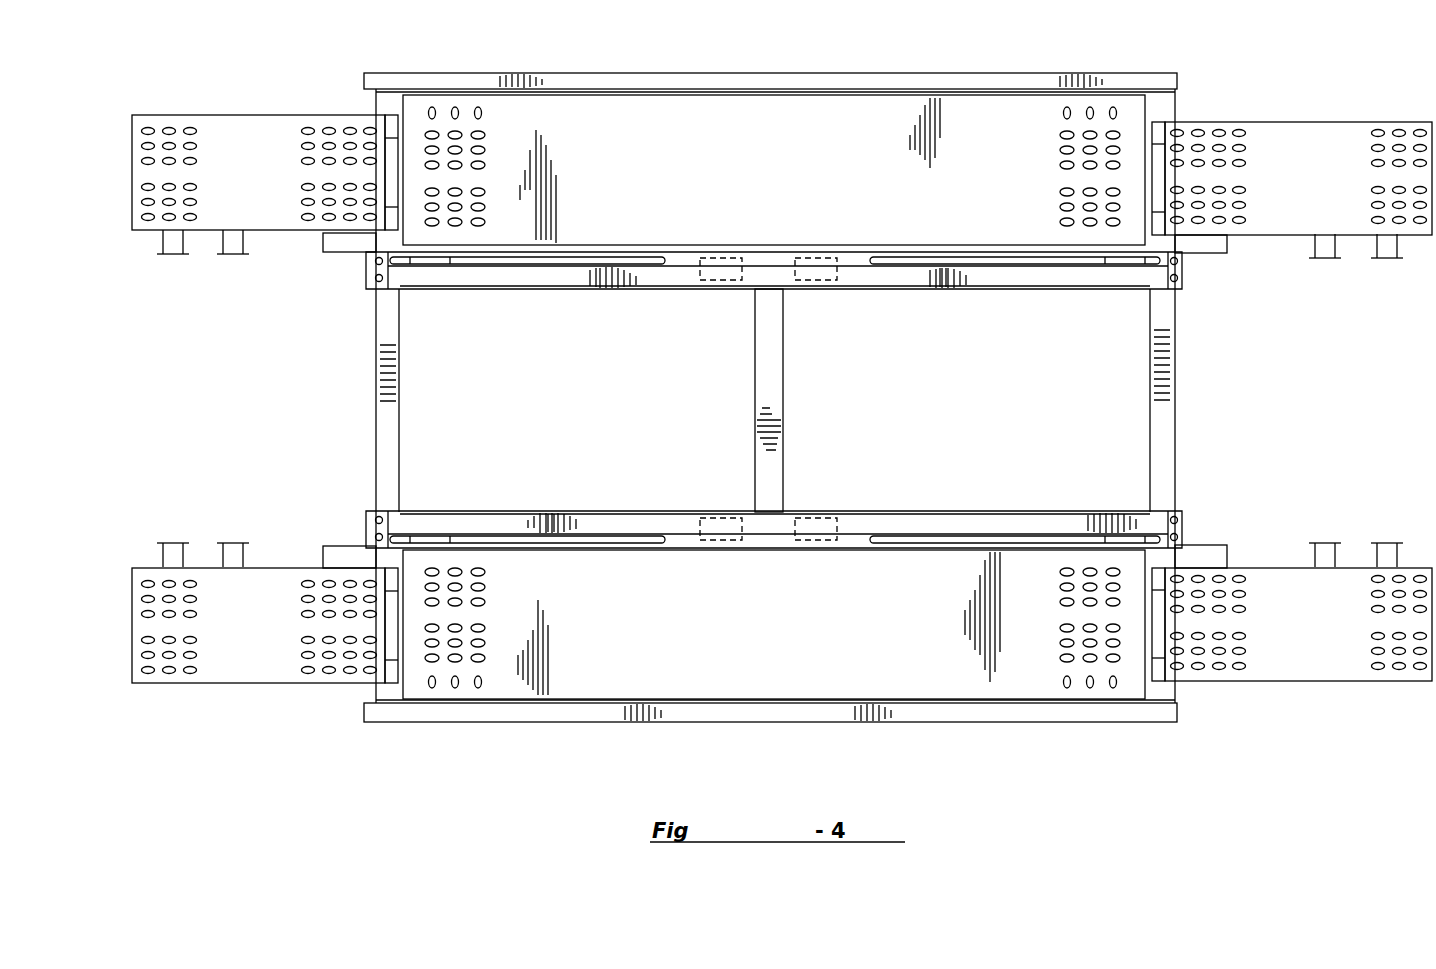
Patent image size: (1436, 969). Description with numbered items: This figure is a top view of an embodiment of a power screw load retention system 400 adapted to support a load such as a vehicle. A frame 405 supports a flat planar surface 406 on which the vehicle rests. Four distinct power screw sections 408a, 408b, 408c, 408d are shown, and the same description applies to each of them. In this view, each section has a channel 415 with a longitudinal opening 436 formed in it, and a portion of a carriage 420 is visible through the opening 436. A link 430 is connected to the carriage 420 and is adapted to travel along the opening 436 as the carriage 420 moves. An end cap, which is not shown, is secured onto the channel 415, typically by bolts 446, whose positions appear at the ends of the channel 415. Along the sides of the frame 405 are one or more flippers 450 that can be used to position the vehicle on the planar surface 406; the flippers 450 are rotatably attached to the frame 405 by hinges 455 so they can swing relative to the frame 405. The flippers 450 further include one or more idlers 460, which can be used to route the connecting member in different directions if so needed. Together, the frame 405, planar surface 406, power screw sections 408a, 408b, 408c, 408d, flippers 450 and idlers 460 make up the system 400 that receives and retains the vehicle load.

The power screw load retention system 400 is at (380, 53).
The frame 405 is at (870, 90).
The flat planar surface 406 is at (712, 135).
The power screw section 408a is at (346, 290).
The power screw section 408b is at (1212, 290).
The power screw section 408c is at (346, 542).
The power screw section 408d is at (1212, 542).
The channel 415 is at (550, 290).
The carriage 420 is at (420, 268).
The link 430 is at (438, 268).
The longitudinal opening 436 is at (572, 270).
The bolts 446 is at (372, 282).
The flippers 450 is at (262, 113).
The hinges 455 is at (385, 113).
The idlers 460 is at (176, 256).